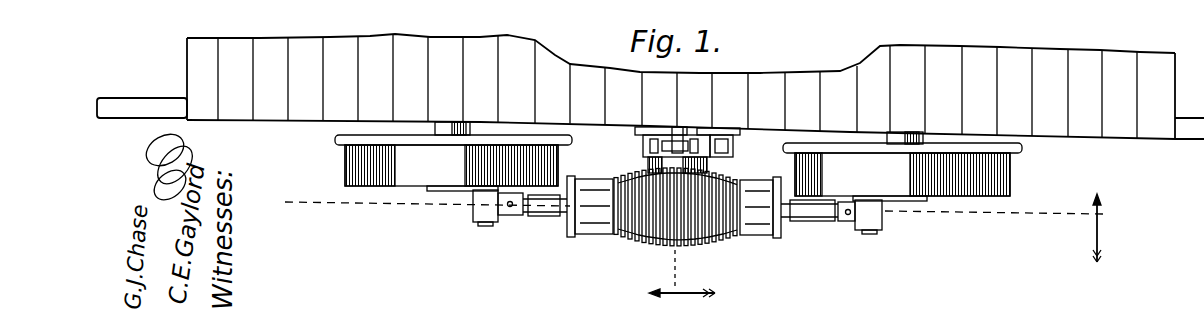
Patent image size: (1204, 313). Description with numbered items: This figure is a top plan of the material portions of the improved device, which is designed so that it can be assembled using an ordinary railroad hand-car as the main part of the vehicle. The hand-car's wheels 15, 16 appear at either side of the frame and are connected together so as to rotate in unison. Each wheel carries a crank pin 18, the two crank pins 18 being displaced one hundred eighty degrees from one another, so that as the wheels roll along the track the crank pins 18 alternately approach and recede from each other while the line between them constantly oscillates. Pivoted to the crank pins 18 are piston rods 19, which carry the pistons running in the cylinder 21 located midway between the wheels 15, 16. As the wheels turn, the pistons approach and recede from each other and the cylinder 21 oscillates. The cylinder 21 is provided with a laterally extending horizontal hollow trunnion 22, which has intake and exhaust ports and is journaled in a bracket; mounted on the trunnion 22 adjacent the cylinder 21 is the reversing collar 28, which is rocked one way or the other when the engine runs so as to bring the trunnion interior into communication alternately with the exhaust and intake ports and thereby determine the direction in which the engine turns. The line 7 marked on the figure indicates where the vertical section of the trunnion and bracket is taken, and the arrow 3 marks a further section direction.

The wheel 15 is at (453, 160).
The wheel 16 is at (902, 169).
The reversing collar 28 is at (643, 155).
The hollow trunnion 22 is at (705, 161).
The cylinder 21 is at (649, 246).
The crank pin 18 is at (480, 223).
The piston rod 19 is at (516, 216).
The direction arrow 3 is at (1106, 228).
The section line 7 is at (682, 301).